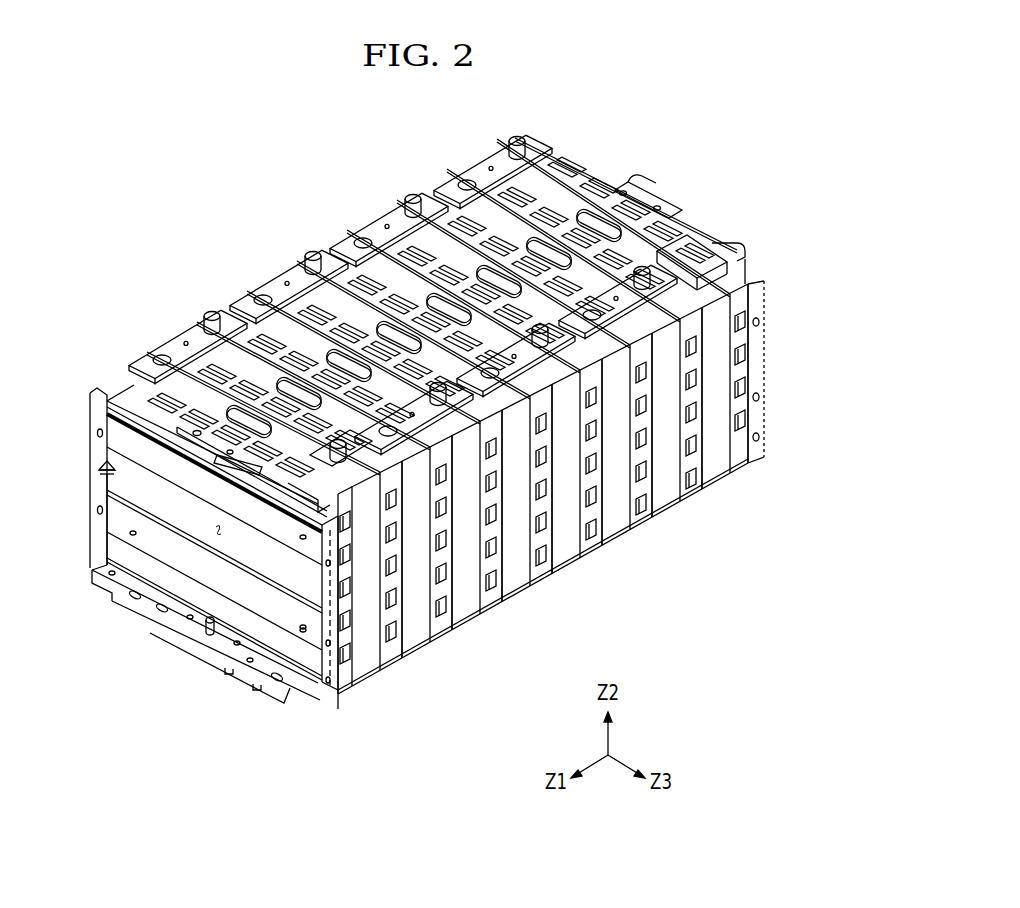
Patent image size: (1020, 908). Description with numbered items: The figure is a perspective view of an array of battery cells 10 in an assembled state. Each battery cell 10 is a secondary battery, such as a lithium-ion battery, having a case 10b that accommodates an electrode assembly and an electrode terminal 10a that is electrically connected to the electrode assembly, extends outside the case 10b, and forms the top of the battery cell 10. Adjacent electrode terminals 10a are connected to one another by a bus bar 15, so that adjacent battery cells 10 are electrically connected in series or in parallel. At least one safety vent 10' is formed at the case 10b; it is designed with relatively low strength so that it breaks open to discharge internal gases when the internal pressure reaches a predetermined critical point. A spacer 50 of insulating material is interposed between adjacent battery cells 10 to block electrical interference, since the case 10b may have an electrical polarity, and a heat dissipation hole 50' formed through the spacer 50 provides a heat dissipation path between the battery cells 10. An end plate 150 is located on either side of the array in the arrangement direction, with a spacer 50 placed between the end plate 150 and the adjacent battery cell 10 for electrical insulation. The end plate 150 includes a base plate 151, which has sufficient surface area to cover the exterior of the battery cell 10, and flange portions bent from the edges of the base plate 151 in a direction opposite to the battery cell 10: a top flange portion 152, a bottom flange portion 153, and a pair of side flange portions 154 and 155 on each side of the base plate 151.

The battery cell 10 is at (447, 446).
The spacer 50 is at (547, 511).
The heat dissipation hole 50' is at (467, 555).
The case 10b is at (560, 553).
The electrode terminal 10a is at (507, 395).
The bus bar 15 is at (493, 168).
The safety vent 10' is at (613, 216).
The top flange portion 152 is at (688, 212).
The side flange portion 154 is at (758, 372).
The base plate 151 is at (163, 577).
The bottom flange portion 153 is at (200, 637).
The side flange portion 155 is at (320, 663).
The end plate 150 is at (326, 708).